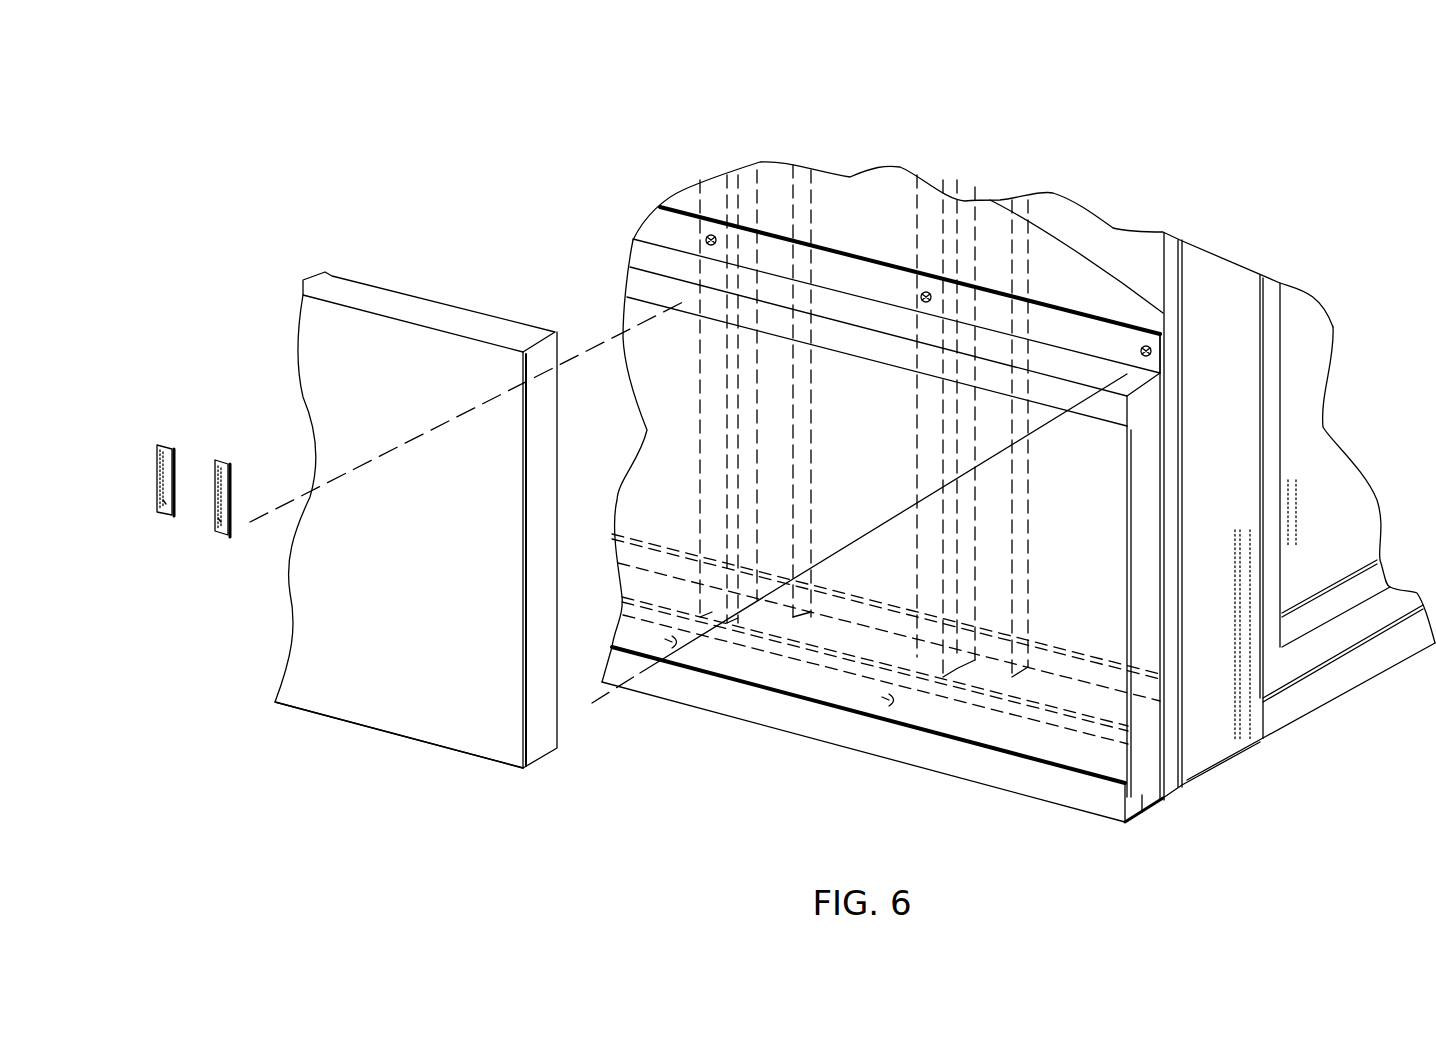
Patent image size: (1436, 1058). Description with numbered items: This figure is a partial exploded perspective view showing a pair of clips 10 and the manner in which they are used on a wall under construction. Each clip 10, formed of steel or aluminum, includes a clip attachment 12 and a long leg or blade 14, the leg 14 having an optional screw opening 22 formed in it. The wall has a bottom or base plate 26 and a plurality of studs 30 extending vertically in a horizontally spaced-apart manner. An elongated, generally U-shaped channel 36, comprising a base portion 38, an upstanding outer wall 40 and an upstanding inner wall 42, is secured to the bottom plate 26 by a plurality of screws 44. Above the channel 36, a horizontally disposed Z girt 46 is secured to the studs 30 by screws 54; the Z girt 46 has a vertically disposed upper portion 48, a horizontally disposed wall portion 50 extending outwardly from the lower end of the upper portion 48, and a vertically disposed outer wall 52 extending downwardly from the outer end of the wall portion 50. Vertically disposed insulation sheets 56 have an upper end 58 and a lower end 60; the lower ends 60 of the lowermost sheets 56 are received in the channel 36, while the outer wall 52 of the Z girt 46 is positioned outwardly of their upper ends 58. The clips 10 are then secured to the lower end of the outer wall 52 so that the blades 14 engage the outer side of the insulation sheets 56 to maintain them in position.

The clip 10 is at (158, 437).
The clip attachment 12 is at (173, 502).
The leg or blade 14 is at (165, 467).
The screw opening 22 is at (163, 502).
The bottom or base plate 26 is at (1290, 697).
The studs 30 is at (1020, 200).
The U-shaped channel 36 is at (1095, 823).
The base portion 38 is at (1147, 805).
The upstanding outer wall 40 is at (1025, 787).
The upstanding inner wall 42 is at (1175, 788).
The screws 44 is at (630, 693).
The Z girts 46 is at (1110, 332).
The upper portion 48 is at (1045, 325).
The wall portion 50 is at (1165, 355).
The outer wall 52 is at (1163, 463).
The screws 54 is at (1163, 353).
The insulation sheets 56 is at (518, 300).
The upper end 58 is at (428, 300).
The lower end 60 is at (432, 745).